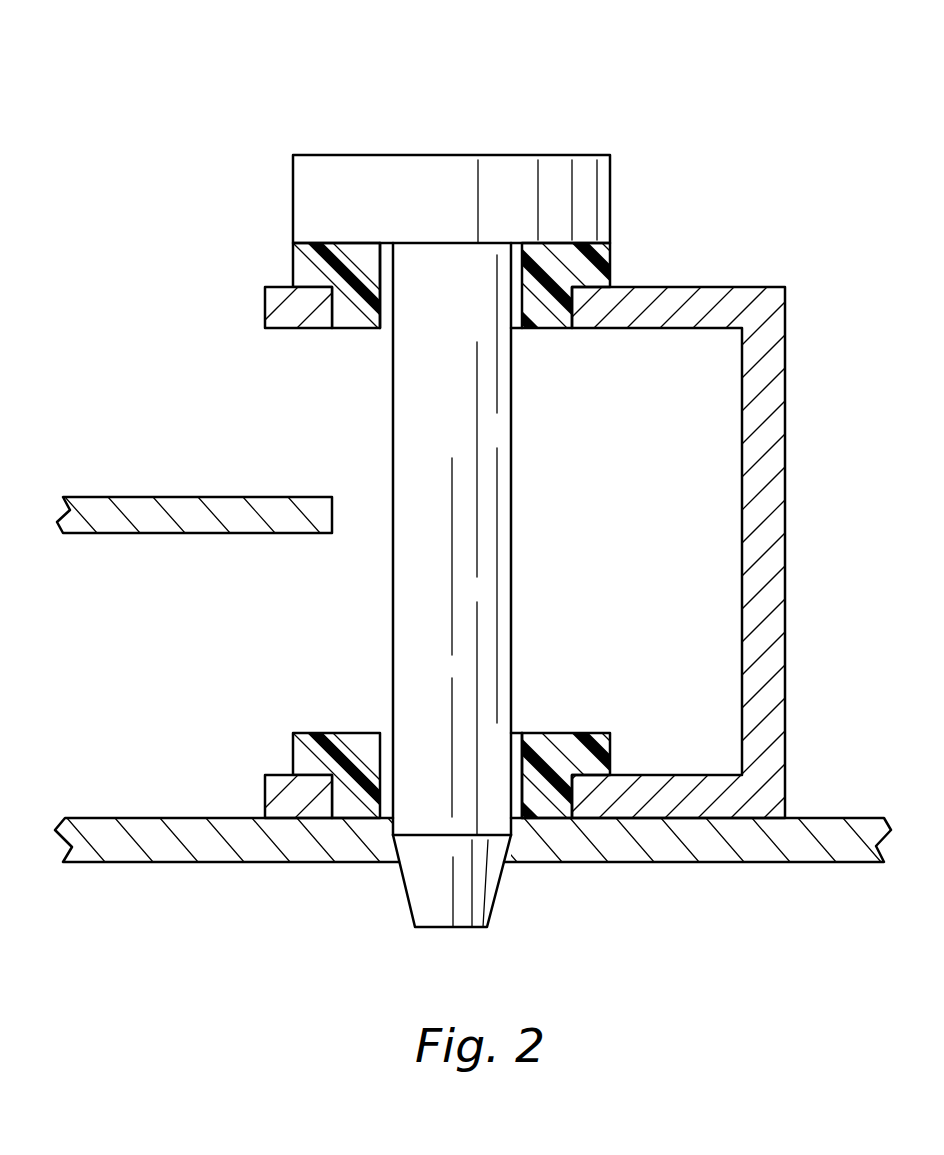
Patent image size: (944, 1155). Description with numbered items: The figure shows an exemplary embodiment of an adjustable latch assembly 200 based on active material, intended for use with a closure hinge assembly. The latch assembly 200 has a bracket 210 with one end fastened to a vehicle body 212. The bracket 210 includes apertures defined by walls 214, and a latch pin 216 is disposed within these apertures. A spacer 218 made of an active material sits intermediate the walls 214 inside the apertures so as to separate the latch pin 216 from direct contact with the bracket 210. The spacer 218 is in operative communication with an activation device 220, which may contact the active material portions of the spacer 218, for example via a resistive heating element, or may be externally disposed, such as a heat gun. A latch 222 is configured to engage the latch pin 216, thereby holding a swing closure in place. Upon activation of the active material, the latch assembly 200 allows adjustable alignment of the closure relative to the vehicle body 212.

The adjustable latch assembly 200 is at (738, 128).
The bracket 210 is at (785, 497).
The vehicle body 212 is at (173, 862).
The walls 214 is at (336, 303).
The latch pin 216 is at (440, 190).
The spacer 218 is at (583, 267).
The activation device 220 is at (386, 336).
The latch 222 is at (178, 497).